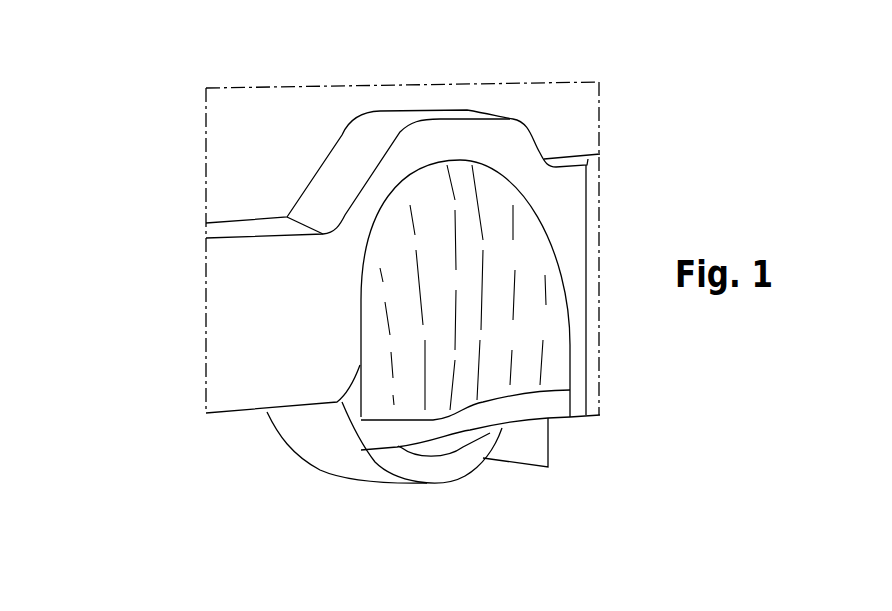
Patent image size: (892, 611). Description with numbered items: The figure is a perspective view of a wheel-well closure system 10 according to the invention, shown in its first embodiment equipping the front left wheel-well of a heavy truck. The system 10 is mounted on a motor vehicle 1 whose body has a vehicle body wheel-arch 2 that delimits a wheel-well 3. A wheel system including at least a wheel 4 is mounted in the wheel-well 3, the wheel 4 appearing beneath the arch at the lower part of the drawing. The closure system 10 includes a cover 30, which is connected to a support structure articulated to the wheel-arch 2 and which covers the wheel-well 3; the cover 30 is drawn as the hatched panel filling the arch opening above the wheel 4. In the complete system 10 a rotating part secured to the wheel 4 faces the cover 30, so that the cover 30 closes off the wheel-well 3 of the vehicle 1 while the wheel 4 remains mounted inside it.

The motor vehicle 1 is at (140, 137).
The vehicle body wheel-arch 2 is at (468, 141).
The wheel-well 3 is at (350, 412).
The wheel 4 is at (358, 463).
The wheel-well closure system 10 is at (495, 477).
The cover 30 is at (555, 349).